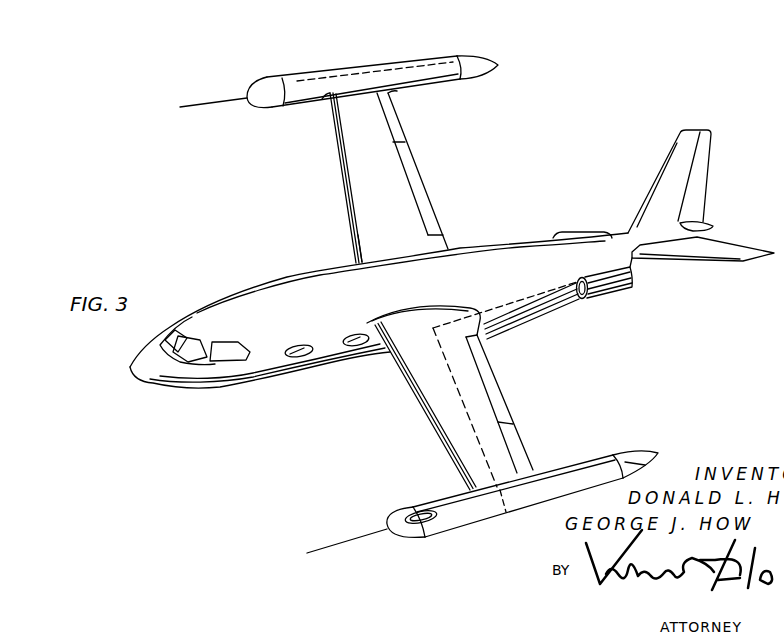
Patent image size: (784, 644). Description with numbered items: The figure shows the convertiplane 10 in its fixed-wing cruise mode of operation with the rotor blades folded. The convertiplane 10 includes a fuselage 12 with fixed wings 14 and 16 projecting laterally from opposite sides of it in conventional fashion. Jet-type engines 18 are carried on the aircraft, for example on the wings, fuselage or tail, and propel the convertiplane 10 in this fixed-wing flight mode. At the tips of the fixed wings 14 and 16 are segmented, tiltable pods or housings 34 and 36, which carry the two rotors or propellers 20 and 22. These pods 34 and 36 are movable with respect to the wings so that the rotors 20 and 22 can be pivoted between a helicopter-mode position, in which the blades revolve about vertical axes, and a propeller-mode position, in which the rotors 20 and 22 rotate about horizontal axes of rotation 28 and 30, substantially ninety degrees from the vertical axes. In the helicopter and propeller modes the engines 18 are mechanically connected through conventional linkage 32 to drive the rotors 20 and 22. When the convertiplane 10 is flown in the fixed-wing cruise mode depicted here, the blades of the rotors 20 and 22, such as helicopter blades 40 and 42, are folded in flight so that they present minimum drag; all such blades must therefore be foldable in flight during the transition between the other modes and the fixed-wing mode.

The convertiplane 10 is at (213, 253).
The fuselage 12 is at (310, 278).
The fixed wing 14 is at (352, 173).
The fixed wing 16 is at (419, 393).
The jet-type engine 18 is at (588, 231).
The rotor 20 is at (412, 495).
The rotor 22 is at (292, 72).
The horizontal axis of rotation 28 is at (351, 538).
The horizontal axis of rotation 30 is at (222, 77).
The linkage 32 is at (463, 400).
The tiltable pod 34 is at (440, 530).
The tiltable pod 36 is at (315, 82).
The helicopter blade 40 is at (555, 487).
The helicopter blade 42 is at (433, 44).